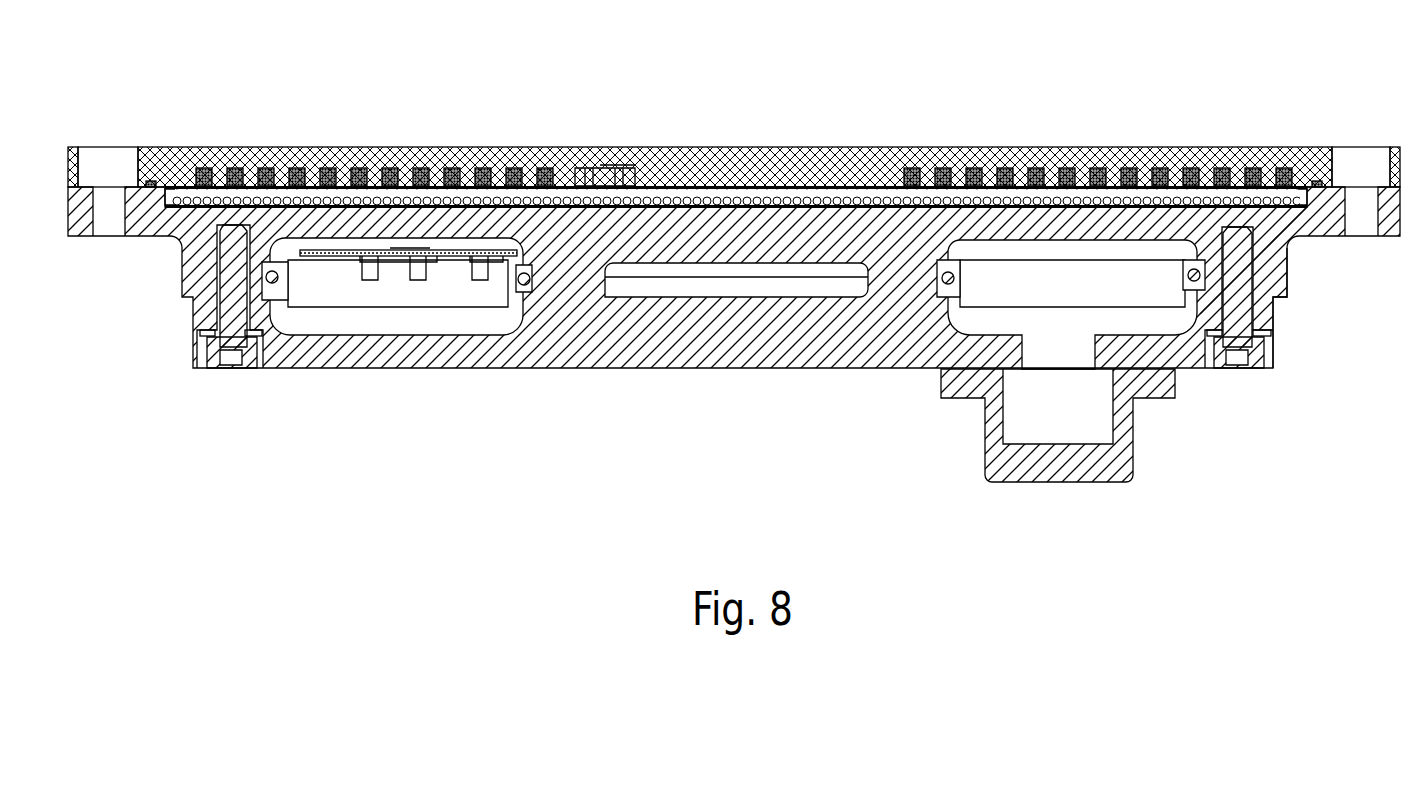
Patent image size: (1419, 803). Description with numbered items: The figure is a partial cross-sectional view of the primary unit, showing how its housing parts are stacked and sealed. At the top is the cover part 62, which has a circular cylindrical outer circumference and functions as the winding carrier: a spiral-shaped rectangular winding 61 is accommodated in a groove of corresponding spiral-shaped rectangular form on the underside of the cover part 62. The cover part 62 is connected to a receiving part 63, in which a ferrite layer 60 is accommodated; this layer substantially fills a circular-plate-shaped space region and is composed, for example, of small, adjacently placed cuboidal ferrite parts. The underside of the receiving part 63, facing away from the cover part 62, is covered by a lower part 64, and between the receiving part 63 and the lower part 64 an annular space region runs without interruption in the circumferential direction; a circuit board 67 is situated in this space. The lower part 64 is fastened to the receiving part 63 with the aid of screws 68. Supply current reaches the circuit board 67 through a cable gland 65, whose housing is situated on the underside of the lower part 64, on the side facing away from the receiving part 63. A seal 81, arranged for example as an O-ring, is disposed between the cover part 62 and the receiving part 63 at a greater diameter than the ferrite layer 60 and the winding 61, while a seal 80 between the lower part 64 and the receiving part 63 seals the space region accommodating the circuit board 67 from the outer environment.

The ferrite layer 60 is at (755, 197).
The winding 61 is at (265, 176).
The cover part 62 is at (670, 158).
The receiving part 63 is at (1270, 254).
The lower part 64 is at (643, 350).
The cable gland 65 is at (1038, 467).
The circuit board 67 is at (370, 252).
The screws 68 is at (230, 333).
The seal 80 is at (272, 278).
The seal 81 is at (152, 186).